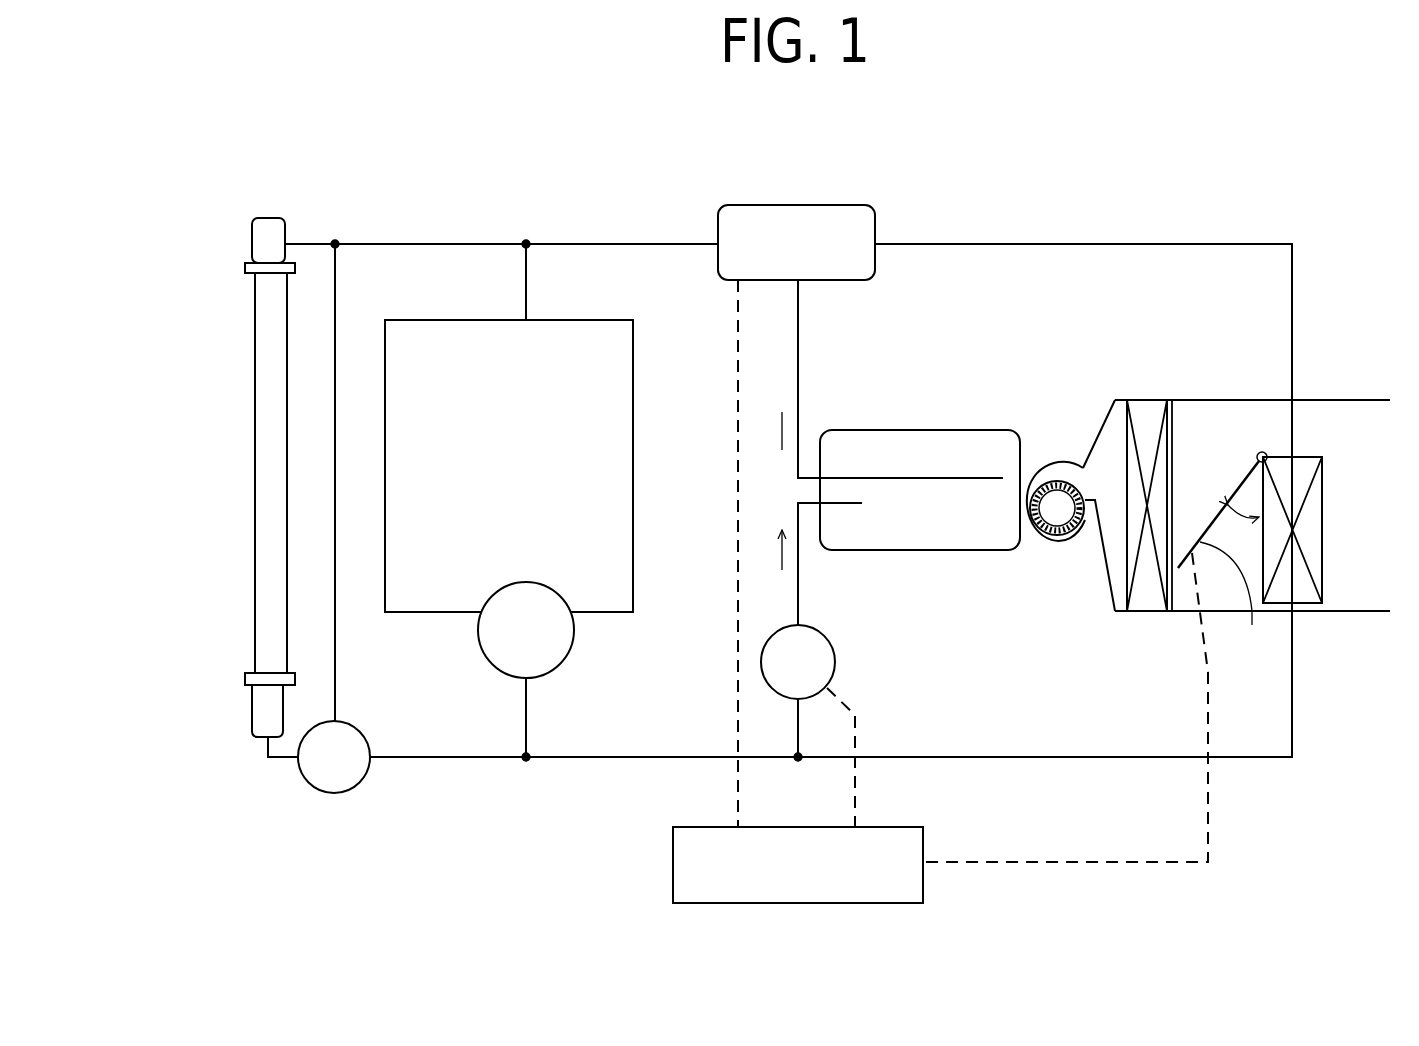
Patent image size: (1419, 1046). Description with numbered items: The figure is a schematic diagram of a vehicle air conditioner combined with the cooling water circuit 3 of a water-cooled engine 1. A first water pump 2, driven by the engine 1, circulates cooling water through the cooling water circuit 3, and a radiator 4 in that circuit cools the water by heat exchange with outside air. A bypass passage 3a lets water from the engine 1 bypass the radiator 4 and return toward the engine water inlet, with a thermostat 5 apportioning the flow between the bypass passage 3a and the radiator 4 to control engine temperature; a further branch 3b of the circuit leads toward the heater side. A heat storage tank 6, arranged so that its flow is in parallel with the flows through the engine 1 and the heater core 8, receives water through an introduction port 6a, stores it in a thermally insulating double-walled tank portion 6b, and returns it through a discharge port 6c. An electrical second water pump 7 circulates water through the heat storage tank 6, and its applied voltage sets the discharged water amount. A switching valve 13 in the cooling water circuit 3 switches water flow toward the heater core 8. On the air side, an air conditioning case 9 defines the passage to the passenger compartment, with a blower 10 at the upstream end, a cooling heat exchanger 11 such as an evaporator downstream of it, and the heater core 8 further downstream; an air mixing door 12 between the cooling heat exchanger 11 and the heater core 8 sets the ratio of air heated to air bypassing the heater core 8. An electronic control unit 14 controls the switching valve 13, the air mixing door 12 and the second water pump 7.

The engine 1 is at (633, 378).
The first water pump 2 is at (566, 660).
The cooling water circuit 3 is at (572, 241).
The bypass passage 3a is at (337, 290).
The heater passage 3b is at (997, 241).
The radiator 4 is at (255, 595).
The thermostat 5 is at (300, 790).
The heat storage tank 6 is at (911, 429).
The introduction port 6a is at (820, 503).
The tank portion 6b is at (965, 550).
The discharge port 6c is at (820, 478).
The second water pump 7 is at (835, 660).
The heater core 8 is at (1313, 553).
The air conditioning case 9 is at (1322, 397).
The blower 10 is at (1048, 540).
The cooling heat exchanger 11 is at (1153, 600).
The air mixing door 12 is at (1101, 657).
The switching valve 13 is at (833, 205).
The electronic control unit 14 is at (798, 591).